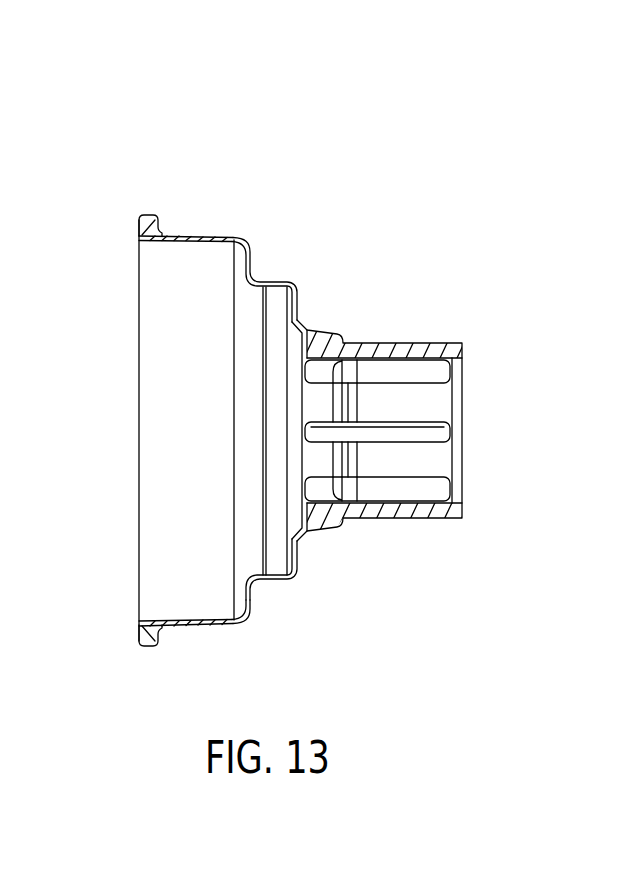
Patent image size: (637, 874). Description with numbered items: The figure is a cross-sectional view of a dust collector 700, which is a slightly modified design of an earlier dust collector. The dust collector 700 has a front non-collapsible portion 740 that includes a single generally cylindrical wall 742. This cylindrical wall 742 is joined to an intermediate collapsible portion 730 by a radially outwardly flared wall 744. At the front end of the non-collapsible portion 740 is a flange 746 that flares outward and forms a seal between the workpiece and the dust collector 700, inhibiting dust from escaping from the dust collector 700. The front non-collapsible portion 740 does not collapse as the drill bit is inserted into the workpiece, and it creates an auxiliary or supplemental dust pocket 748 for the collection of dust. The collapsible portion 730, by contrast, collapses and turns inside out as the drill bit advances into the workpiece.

The dust collector 700 is at (339, 206).
The intermediate collapsible portion 730 is at (273, 583).
The front non-collapsible portion 740 is at (200, 629).
The generally cylindrical wall 742 is at (198, 234).
The radially outwardly flared wall 744 is at (255, 257).
The flange 746 is at (139, 228).
The auxiliary or supplemental dust pocket 748 is at (242, 612).